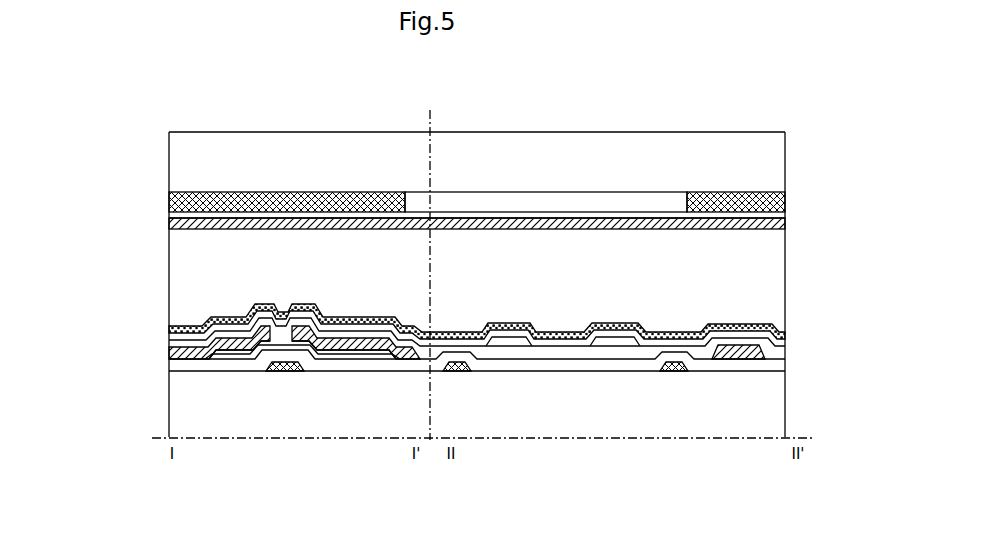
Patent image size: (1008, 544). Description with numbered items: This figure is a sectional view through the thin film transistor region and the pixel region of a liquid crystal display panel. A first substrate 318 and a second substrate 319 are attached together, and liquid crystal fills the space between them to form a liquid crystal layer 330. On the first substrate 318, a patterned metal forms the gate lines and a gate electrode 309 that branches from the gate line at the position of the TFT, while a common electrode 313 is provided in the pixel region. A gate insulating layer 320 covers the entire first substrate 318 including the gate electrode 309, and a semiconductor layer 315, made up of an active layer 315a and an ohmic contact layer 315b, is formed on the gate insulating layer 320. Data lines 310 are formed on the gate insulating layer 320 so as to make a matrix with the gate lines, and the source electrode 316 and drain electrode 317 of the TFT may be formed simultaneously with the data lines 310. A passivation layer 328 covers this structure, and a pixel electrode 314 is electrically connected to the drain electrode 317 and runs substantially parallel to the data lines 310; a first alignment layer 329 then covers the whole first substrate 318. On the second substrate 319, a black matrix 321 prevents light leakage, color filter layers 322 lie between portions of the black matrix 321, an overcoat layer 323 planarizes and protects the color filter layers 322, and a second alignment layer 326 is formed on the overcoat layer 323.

The gate electrode 309 is at (297, 372).
The data line 310 is at (740, 350).
The common electrode 313 is at (560, 372).
The pixel electrode 314 is at (617, 337).
The semiconductor layer 315 is at (221, 372).
The active layer 315a is at (240, 353).
The ohmic contact layer 315b is at (228, 338).
The source electrode 316 is at (253, 330).
The drain electrode 317 is at (370, 359).
The first substrate 318 is at (778, 402).
The second substrate 319 is at (176, 160).
The gate insulating layer 320 is at (778, 365).
The black matrix 321 is at (170, 202).
The color filter layer 322 is at (512, 200).
The overcoat layer 323 is at (176, 216).
The second alignment layer 326 is at (778, 222).
The passivation layer 328 is at (778, 350).
The first alignment layer 329 is at (494, 330).
The liquid crystal layer 330 is at (775, 263).